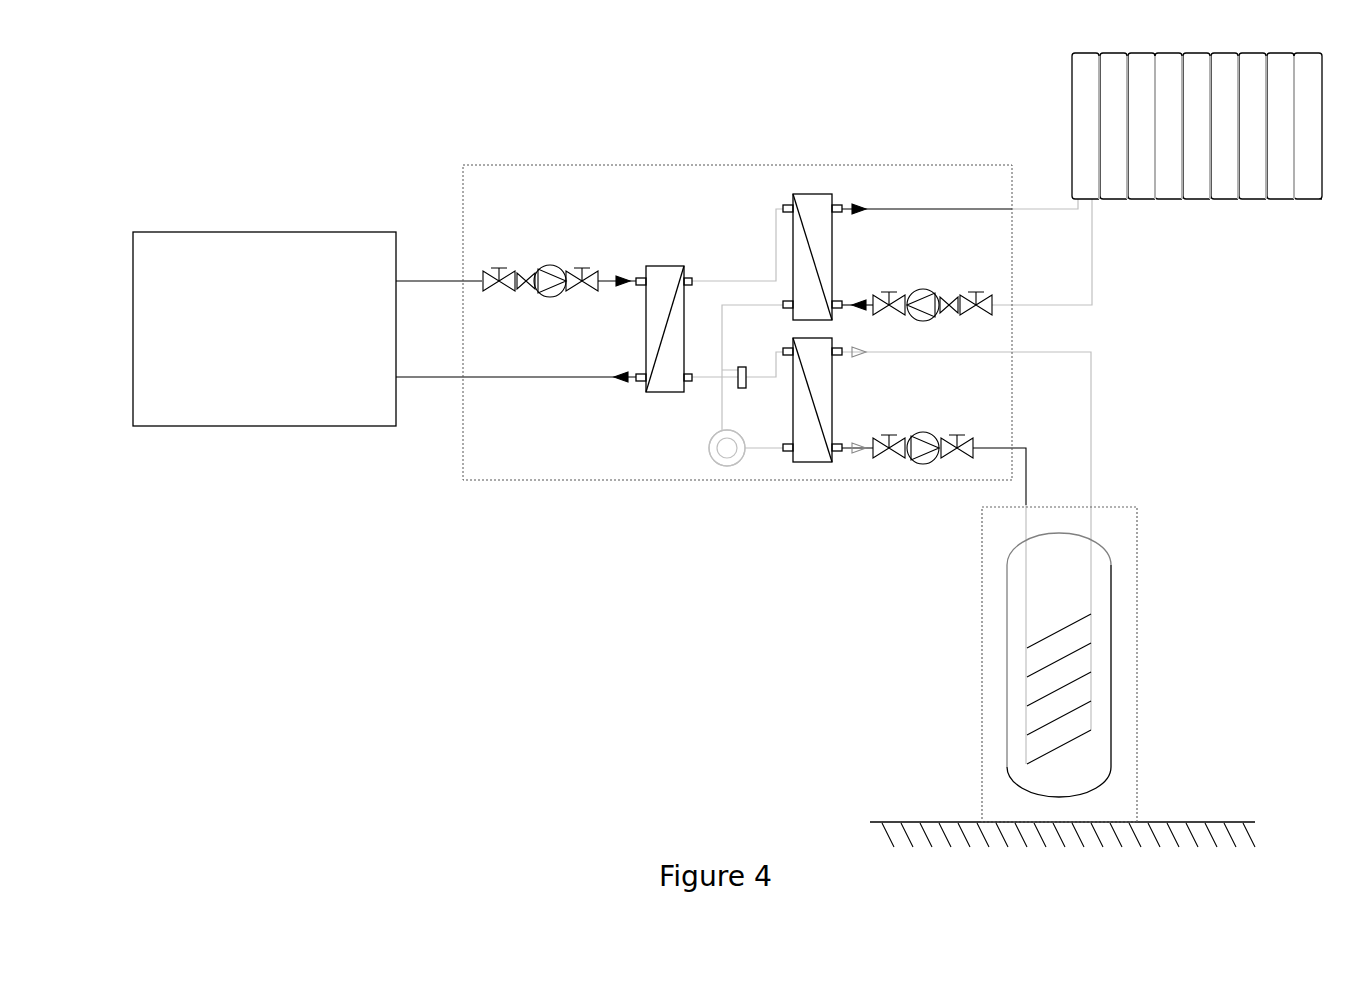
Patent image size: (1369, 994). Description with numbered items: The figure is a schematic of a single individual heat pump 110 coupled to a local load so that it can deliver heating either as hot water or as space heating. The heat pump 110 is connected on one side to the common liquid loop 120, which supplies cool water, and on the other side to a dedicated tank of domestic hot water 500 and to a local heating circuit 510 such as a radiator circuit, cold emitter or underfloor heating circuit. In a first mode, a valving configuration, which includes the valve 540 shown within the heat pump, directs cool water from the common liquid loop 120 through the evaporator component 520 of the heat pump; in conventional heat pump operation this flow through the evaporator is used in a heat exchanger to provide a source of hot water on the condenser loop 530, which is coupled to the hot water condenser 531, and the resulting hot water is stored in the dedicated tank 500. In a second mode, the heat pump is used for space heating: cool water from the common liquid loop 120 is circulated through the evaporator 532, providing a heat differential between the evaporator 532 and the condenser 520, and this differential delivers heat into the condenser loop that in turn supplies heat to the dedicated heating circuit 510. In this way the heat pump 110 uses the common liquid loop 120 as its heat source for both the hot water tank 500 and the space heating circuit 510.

The heat pump 110 is at (578, 522).
The common liquid loop 120 is at (187, 453).
The tank of domestic hot water 500 is at (1162, 613).
The local heating circuit 510 is at (1112, 270).
The evaporator component 520 is at (668, 400).
The condenser loop 530 is at (771, 464).
The hot water condenser 531 is at (821, 466).
The evaporator 532 is at (829, 185).
The valve 540 is at (729, 352).